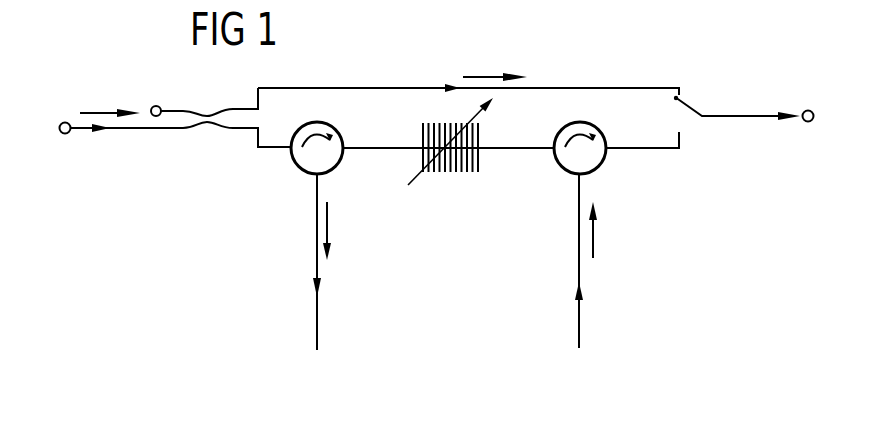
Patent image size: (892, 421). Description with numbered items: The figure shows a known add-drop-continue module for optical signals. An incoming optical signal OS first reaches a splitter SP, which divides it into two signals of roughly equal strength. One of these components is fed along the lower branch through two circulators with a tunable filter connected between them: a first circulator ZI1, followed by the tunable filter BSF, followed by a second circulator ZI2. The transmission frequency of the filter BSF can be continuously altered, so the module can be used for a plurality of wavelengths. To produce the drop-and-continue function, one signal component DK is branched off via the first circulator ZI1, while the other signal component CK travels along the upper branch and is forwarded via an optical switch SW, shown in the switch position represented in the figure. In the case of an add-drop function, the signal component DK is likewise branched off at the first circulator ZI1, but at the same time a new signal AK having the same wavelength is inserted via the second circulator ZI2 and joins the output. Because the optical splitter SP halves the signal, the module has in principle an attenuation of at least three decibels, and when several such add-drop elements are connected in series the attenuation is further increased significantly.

The optical signal OS is at (100, 113).
The splitter SP is at (210, 130).
The first circulator ZI1 is at (302, 175).
The second circulator ZI2 is at (565, 175).
The tunable filter BSF is at (453, 172).
The optical switch SW is at (693, 107).
The signal component Ck CK is at (495, 57).
The signal component Dk DK is at (339, 262).
The new signal Ak AK is at (603, 261).